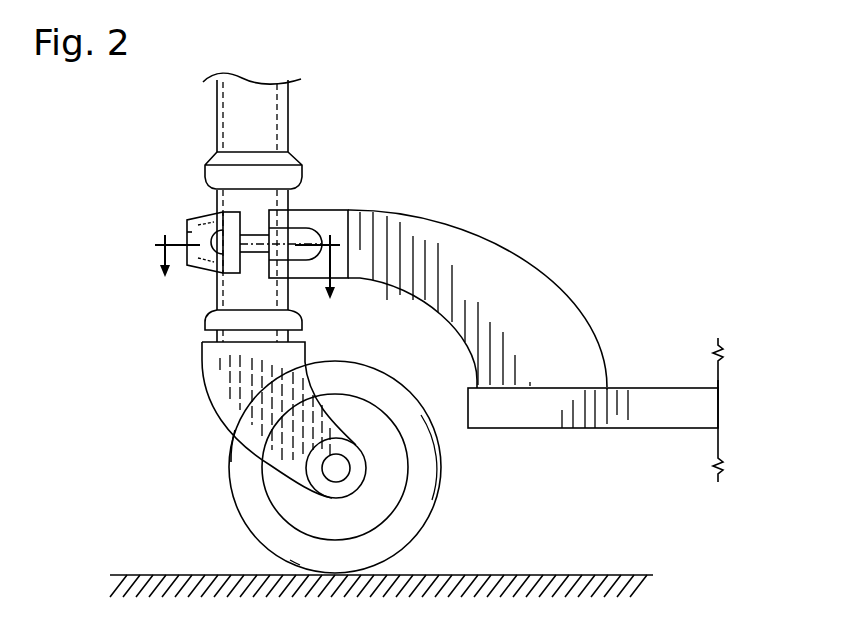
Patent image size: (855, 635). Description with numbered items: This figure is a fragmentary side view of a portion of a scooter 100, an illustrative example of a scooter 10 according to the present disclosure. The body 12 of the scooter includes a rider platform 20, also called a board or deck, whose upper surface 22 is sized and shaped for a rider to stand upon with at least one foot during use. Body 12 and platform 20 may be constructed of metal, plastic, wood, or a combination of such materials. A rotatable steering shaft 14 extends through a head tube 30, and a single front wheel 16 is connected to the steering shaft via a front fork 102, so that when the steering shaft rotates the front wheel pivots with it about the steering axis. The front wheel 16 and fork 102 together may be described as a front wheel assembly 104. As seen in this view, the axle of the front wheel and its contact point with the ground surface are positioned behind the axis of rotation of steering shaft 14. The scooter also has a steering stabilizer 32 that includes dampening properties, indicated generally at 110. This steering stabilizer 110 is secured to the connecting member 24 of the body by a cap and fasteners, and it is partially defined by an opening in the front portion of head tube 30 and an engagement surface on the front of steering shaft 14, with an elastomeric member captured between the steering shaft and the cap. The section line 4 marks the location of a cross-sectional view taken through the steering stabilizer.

The scooter 10 is at (724, 95).
The scooter 100 is at (686, 137).
The body 12 is at (692, 310).
The steering shaft 14 is at (288, 118).
The front wheel 16 is at (443, 467).
The rider platform 20 is at (681, 435).
The upper surface 22 is at (621, 388).
The connecting member 24 is at (475, 240).
The head tube 30 is at (298, 210).
The steering stabilizer 32 is at (190, 214).
The front fork 102 is at (220, 412).
The front wheel assembly 104 is at (222, 470).
The steering stabilizer 110 is at (186, 232).
The section line 4- 4 is at (247, 281).